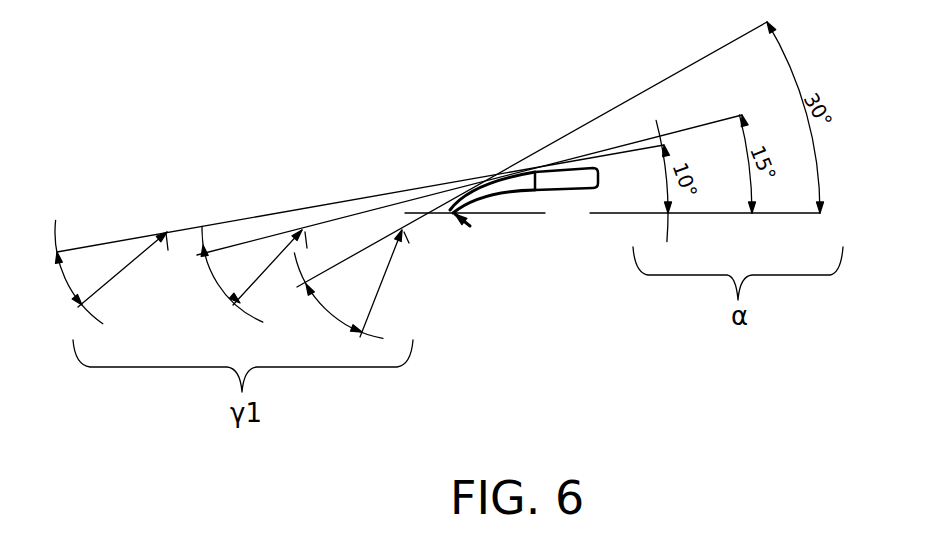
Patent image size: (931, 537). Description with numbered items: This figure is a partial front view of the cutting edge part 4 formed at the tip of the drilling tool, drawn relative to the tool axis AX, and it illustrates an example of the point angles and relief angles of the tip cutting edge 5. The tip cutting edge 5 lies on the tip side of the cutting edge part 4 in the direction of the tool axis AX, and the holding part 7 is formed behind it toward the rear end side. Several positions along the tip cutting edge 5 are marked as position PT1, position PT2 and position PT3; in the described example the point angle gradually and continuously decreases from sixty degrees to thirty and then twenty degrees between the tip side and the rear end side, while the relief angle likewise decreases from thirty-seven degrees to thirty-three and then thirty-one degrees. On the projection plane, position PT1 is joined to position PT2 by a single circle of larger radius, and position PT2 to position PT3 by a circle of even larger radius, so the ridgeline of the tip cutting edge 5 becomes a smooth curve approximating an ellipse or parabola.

The cutting edge part 4 is at (498, 155).
The tip cutting edge 5 is at (527, 172).
The holding part 7 is at (572, 191).
The tool axis AX is at (502, 215).
The position PT1 is at (369, 284).
The position PT2 is at (278, 272).
The position PT3 is at (120, 271).